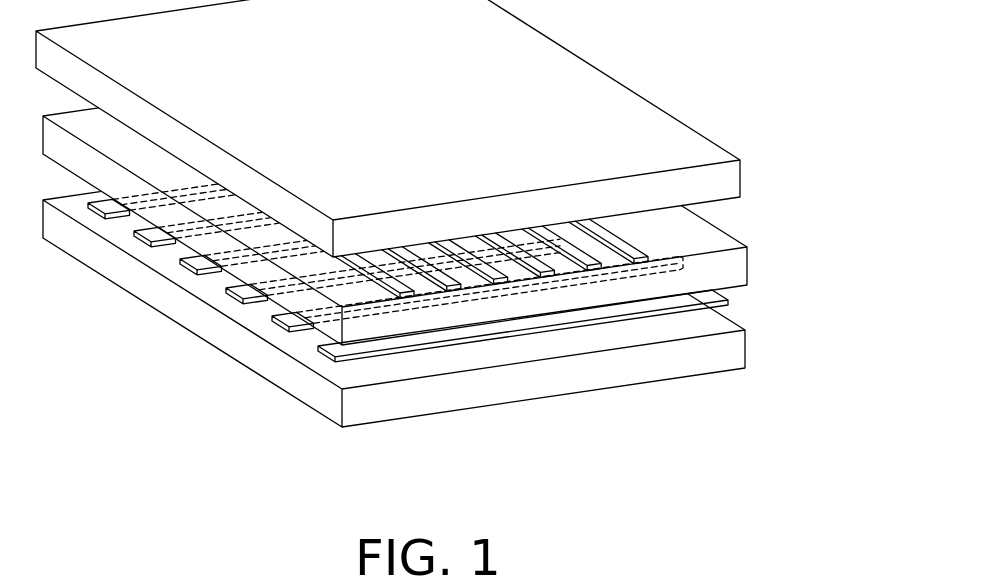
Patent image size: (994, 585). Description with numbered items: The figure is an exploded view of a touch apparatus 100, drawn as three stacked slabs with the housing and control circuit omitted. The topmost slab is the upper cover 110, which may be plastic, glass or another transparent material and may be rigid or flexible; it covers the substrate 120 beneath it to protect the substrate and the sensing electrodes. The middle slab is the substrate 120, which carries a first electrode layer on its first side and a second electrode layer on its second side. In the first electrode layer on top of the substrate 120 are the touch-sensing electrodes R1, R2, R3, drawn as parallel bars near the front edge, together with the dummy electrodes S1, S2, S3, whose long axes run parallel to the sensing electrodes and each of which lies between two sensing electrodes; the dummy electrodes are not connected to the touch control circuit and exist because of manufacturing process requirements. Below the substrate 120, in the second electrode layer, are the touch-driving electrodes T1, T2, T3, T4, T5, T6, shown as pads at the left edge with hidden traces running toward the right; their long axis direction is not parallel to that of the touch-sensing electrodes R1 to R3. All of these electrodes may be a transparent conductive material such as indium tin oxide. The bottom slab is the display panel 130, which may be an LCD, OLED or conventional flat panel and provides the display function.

The touch apparatus 100 is at (754, 463).
The upper cover 110 is at (733, 182).
The substrate 120 is at (736, 270).
The display panel 130 is at (739, 357).
The touch-driving electrode T1 is at (96, 217).
The touch-driving electrode T2 is at (142, 245).
The touch-driving electrode T3 is at (188, 273).
The touch-driving electrode T4 is at (234, 302).
The touch-driving electrode T5 is at (280, 330).
The touch-driving electrode T6 is at (326, 360).
The dummy electrode S1 is at (408, 299).
The touch-sensing electrode R1 is at (455, 292).
The dummy electrode S2 is at (502, 285).
The touch-sensing electrode R2 is at (548, 278).
The dummy electrode S3 is at (595, 271).
The touch-sensing electrode R3 is at (642, 265).